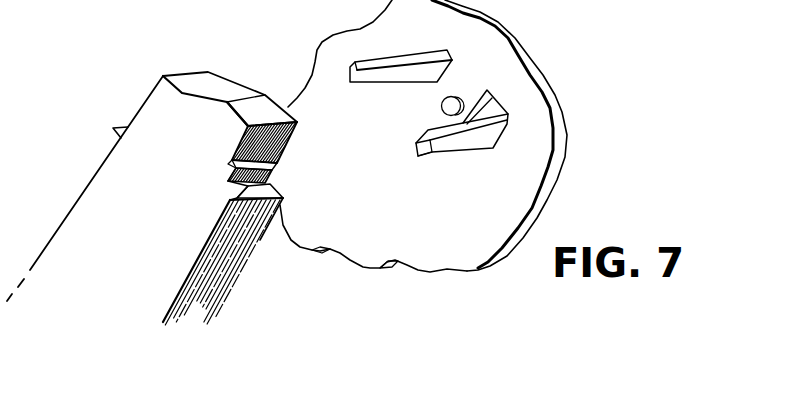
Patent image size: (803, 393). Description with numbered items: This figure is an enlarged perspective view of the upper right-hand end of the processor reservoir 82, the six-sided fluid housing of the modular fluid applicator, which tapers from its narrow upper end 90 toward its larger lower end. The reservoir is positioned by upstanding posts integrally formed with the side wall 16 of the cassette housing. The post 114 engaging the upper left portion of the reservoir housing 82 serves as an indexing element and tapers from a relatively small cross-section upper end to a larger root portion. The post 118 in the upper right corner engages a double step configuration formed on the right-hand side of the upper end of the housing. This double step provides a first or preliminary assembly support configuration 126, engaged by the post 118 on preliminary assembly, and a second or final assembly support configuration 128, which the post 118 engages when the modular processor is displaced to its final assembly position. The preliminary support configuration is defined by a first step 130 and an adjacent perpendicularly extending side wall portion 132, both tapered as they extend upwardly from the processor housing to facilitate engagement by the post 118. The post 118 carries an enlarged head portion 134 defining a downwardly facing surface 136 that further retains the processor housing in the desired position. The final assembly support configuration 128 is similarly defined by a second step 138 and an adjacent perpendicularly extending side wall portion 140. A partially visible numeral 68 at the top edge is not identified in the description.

The side wall 16 is at (392, 222).
The housing portion 68 is at (629, 4).
The fluid reservoir 82 is at (107, 287).
The upper end 90 is at (230, 77).
The post 114 is at (368, 63).
The post 118 is at (461, 158).
The preliminary assembly support configuration 126 is at (279, 188).
The final assembly support configuration 128 is at (290, 139).
The first step 130 is at (269, 215).
The side wall portion 132 is at (230, 193).
The enlarged head portion 134 is at (431, 157).
The downwardly facing surface 136 is at (437, 125).
The second step 138 is at (229, 160).
The side wall portion 140 is at (245, 142).